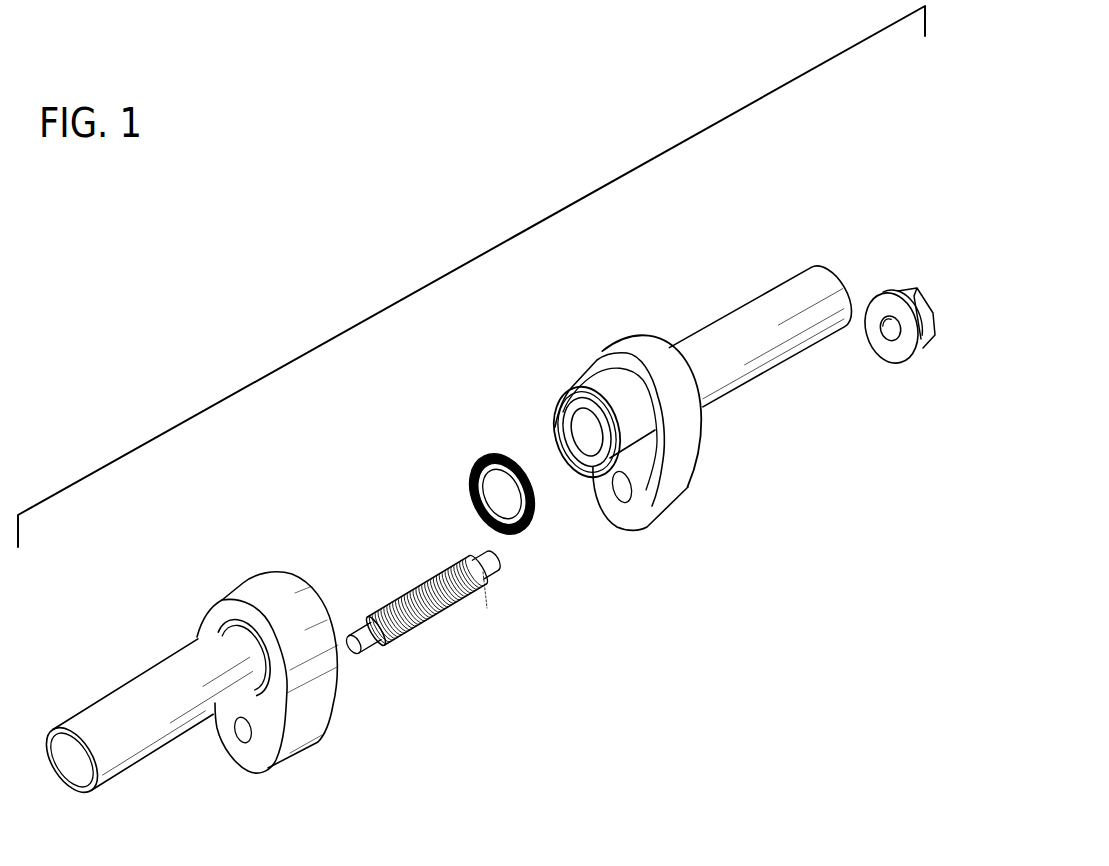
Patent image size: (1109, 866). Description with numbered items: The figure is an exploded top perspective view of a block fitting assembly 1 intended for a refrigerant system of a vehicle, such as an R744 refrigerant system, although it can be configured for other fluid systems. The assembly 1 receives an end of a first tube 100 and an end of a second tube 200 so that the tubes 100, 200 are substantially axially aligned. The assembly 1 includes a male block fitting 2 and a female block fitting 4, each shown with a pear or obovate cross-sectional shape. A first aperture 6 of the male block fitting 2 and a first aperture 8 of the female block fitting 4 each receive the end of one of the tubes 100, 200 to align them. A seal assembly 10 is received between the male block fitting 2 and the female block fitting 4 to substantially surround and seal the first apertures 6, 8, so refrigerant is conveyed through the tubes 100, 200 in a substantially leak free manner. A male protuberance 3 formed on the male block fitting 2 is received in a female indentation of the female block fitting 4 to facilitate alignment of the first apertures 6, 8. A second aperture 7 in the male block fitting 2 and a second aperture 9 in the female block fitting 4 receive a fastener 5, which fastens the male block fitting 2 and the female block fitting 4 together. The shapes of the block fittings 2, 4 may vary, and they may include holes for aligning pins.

The block fitting assembly 1 is at (118, 310).
The male block fitting 2 is at (622, 459).
The male protuberance 3 is at (640, 541).
The female block fitting 4 is at (267, 677).
The fastener 5 is at (453, 595).
The first aperture of the male block fitting 6 is at (587, 460).
The second aperture of the male block fitting 7 is at (620, 490).
The first aperture of the female block fitting 8 is at (250, 733).
The second aperture of the female block fitting 9 is at (236, 731).
The seal assembly 10 is at (490, 455).
The first tube 100 is at (722, 347).
The second tube 200 is at (113, 736).